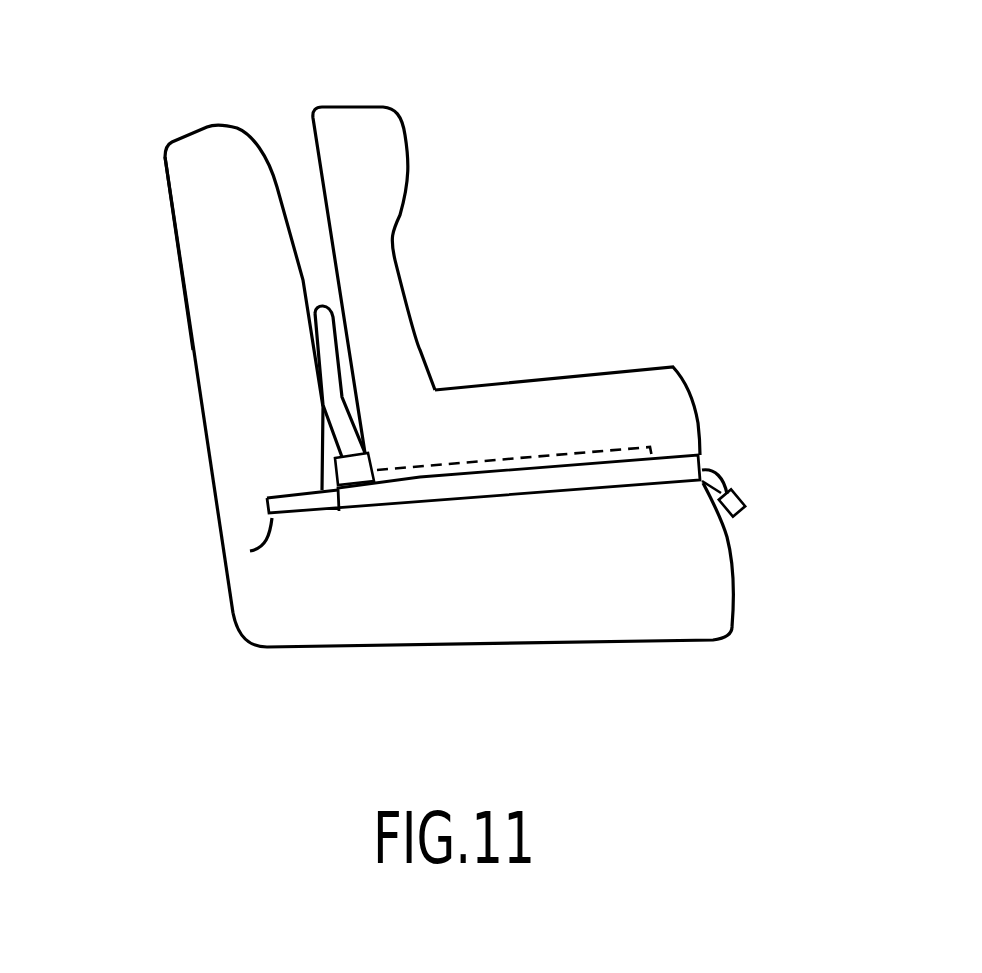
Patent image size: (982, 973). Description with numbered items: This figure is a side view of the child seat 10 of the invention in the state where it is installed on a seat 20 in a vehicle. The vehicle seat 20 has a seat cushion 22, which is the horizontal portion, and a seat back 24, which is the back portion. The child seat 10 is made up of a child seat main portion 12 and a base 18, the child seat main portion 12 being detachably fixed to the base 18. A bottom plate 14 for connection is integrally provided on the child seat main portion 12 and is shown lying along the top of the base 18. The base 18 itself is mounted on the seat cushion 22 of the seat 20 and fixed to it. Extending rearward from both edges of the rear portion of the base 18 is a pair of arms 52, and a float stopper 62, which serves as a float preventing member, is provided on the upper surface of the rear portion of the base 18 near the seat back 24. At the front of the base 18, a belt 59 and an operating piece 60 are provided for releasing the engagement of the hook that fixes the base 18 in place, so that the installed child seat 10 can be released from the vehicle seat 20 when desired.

The child seat 10 is at (478, 284).
The child seat main portion 12 is at (698, 415).
The bottom plate 14 is at (560, 457).
The base 18 is at (411, 500).
The seat 20 is at (209, 124).
The seat cushion 22 is at (530, 613).
The seat back 24 is at (196, 246).
The arms 52 is at (250, 551).
The belt 59 is at (723, 472).
The operating piece 60 is at (740, 518).
The float stopper 62 is at (288, 352).